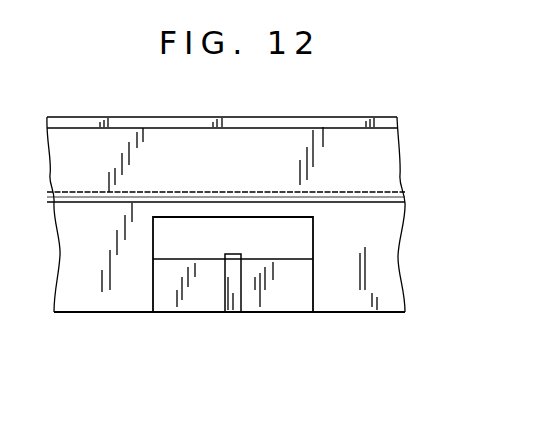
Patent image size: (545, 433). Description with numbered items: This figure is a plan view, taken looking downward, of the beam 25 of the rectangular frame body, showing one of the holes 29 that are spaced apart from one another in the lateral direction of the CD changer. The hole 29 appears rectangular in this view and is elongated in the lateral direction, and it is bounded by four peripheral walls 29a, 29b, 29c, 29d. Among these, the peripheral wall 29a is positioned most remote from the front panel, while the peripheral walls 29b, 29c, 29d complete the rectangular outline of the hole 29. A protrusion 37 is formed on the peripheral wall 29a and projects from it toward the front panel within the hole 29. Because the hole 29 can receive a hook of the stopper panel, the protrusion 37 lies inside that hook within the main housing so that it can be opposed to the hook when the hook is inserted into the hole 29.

The beam 25 is at (383, 217).
The hole 29 is at (291, 242).
The peripheral wall 29a is at (267, 257).
The peripheral wall 29b is at (244, 218).
The peripheral wall 29c is at (320, 242).
The peripheral wall 29d is at (153, 240).
The protrusion 37 is at (228, 247).